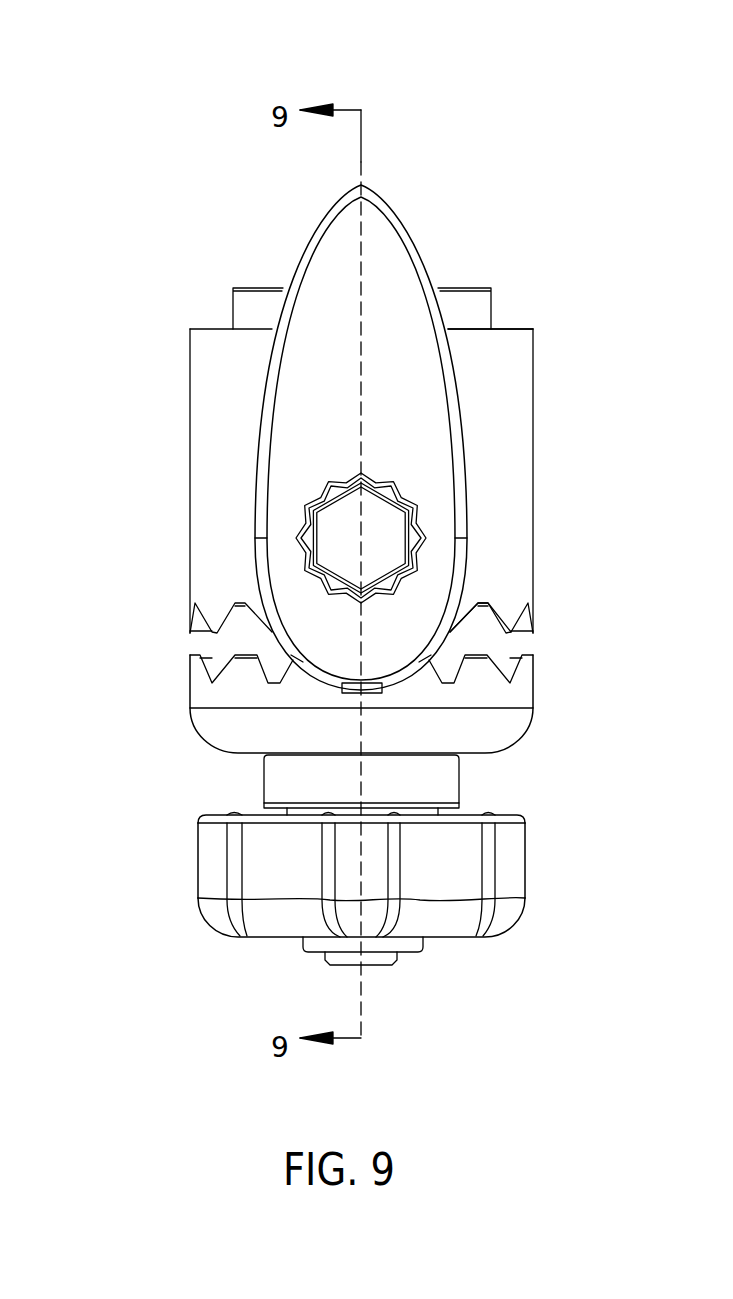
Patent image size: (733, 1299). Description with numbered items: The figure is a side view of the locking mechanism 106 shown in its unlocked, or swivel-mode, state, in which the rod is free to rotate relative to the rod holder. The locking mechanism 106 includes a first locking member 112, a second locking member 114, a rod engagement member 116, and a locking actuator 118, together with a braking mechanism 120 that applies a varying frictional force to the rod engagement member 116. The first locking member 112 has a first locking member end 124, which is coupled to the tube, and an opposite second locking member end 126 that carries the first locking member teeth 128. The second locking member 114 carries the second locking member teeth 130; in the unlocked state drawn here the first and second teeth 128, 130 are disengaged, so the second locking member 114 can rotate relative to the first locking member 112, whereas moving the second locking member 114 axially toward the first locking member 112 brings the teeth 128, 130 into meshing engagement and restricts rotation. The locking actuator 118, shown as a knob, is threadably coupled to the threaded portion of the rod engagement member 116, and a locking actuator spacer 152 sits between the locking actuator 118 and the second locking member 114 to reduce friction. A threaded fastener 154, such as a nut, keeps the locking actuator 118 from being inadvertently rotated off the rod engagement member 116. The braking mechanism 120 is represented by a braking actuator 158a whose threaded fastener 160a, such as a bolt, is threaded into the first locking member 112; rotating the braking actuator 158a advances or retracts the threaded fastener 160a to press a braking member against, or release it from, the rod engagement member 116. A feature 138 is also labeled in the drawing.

The locking mechanism 106 is at (100, 95).
The first locking member 112 is at (535, 377).
The second locking member 114 is at (218, 725).
The rod engagement member 116 is at (468, 302).
The locking actuator 118 is at (498, 882).
The braking mechanism 120 is at (342, 430).
The first locking member end 124 is at (531, 332).
The second locking member end 126 is at (533, 633).
The first locking member teeth 128 is at (508, 622).
The second locking member teeth 130 is at (213, 680).
The left block 138 is at (250, 317).
The locking actuator spacer 152 is at (450, 800).
The threaded fastener 154 is at (403, 942).
The braking actuator 158a is at (395, 203).
The threaded fastener 160a is at (372, 572).